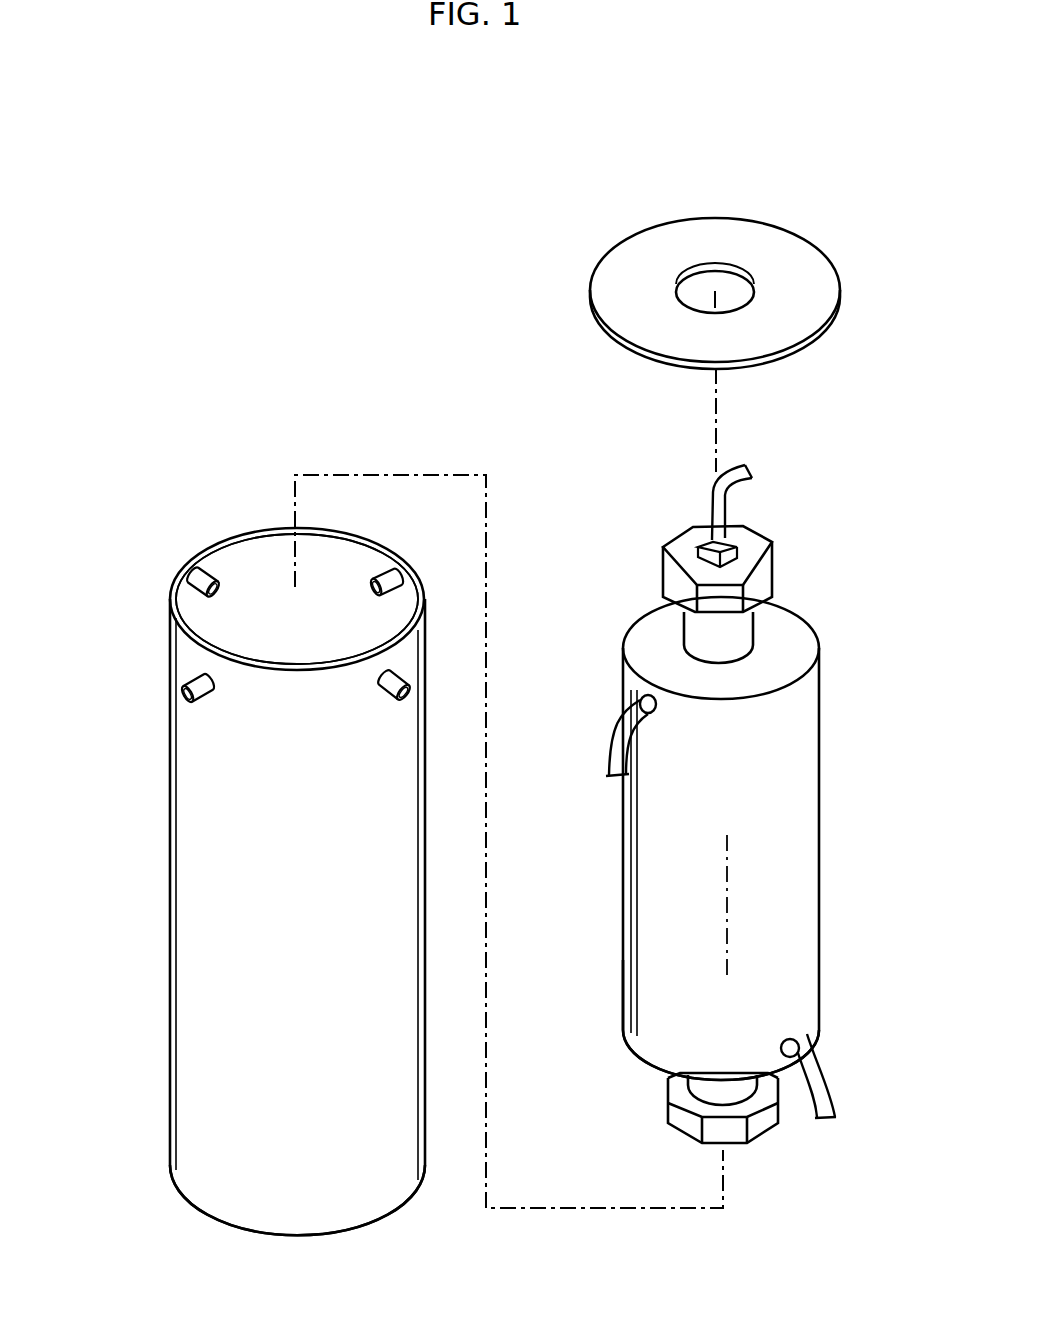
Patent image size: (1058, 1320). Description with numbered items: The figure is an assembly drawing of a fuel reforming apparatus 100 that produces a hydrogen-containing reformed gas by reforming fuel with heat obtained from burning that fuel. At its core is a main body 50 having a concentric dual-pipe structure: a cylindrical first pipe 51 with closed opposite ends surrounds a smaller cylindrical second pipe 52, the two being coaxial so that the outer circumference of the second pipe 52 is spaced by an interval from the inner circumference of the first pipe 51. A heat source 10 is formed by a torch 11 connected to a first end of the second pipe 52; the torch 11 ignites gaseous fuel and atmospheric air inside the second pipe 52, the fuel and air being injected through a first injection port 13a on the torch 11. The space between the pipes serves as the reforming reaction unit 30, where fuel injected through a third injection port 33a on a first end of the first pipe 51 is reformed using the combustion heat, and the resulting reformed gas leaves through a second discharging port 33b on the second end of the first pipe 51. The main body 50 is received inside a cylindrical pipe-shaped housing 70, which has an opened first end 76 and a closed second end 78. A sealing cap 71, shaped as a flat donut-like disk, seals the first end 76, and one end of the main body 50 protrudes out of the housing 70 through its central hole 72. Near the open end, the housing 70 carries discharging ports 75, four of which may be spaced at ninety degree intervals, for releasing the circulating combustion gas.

The fuel reforming apparatus 100 is at (543, 181).
The heat source 10 is at (792, 535).
The torch 11 is at (697, 550).
The first injection port 13a is at (705, 542).
The reforming reaction unit 30 is at (830, 760).
The third injection port 33a is at (640, 698).
The second discharging port 33b is at (800, 1040).
The main body 50 is at (555, 997).
The first pipe 51 is at (627, 987).
The second pipe 52 is at (697, 1083).
The housing 70 is at (145, 995).
The sealing cap 71 is at (828, 287).
The central hole 72 is at (702, 283).
The discharging ports 75 is at (189, 573).
The first end 76 is at (252, 550).
The second end 78 is at (287, 1236).